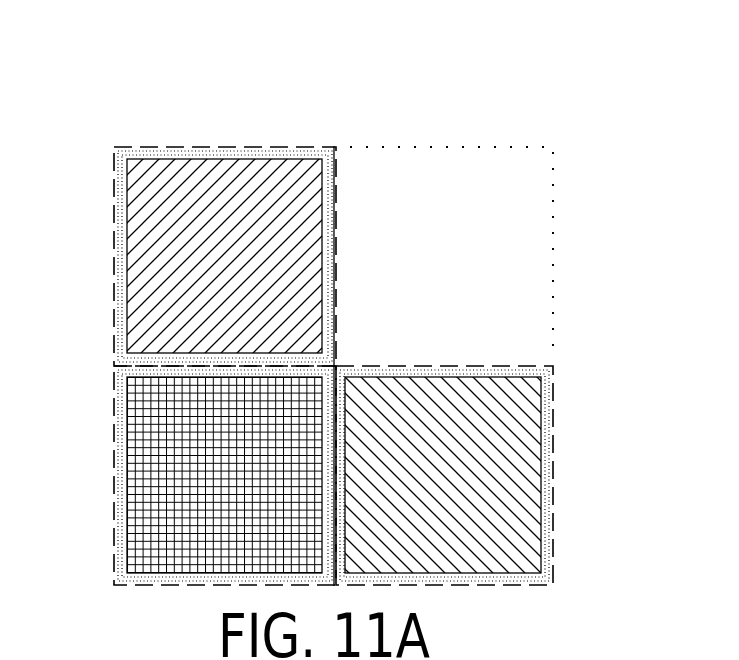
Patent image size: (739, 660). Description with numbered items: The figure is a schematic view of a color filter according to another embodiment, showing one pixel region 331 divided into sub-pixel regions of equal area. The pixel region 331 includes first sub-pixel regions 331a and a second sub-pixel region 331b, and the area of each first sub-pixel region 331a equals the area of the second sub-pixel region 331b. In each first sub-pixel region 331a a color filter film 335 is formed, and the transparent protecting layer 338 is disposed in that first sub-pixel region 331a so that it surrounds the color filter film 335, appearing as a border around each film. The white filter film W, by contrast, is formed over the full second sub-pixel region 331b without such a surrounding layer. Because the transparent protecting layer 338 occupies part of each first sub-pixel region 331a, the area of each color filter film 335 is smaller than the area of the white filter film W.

The pixel region 331 is at (445, 57).
The first sub-pixel region 331a is at (225, 215).
The second sub-pixel region 331b is at (402, 146).
The color filter film 335 is at (128, 304).
The transparent protecting layer 338 is at (120, 238).
The white filter film W is at (453, 258).